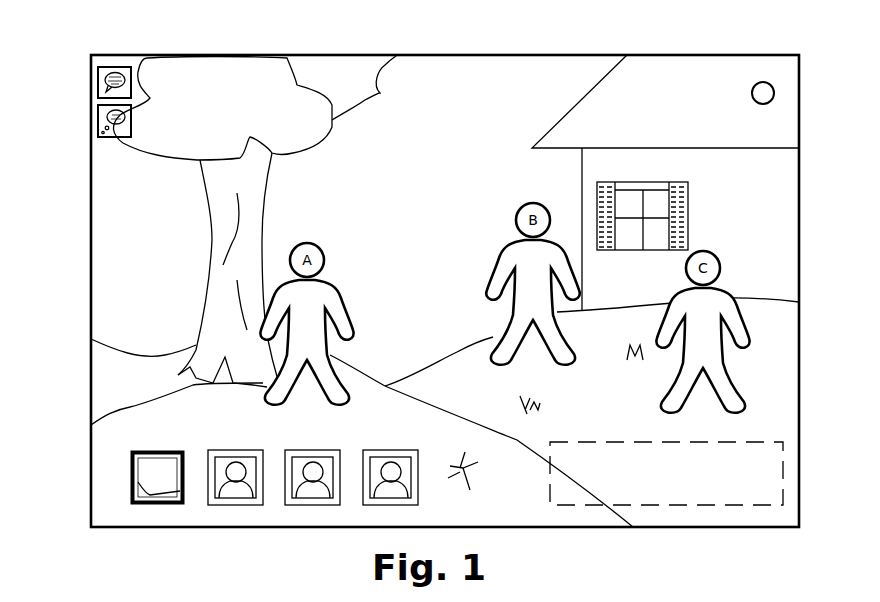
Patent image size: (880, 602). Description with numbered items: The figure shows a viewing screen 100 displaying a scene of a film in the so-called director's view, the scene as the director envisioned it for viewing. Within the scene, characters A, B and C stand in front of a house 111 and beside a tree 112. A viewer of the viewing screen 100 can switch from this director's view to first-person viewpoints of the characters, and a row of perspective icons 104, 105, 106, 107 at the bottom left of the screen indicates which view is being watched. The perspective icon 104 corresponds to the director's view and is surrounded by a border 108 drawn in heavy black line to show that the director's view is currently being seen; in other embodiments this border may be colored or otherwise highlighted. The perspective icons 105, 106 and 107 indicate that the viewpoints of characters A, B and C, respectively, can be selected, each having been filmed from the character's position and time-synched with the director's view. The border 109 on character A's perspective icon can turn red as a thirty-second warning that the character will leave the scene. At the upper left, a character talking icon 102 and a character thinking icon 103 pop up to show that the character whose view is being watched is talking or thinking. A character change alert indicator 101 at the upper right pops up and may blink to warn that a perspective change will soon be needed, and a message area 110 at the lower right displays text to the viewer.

The viewing screen 100 is at (535, 54).
The character change alert indicator 101 is at (753, 86).
The character talking icon 102 is at (98, 75).
The character thinking icon 103 is at (98, 116).
The perspective icon 104 is at (153, 462).
The perspective icon 105 is at (220, 460).
The perspective icon 106 is at (303, 458).
The perspective icon 107 is at (380, 448).
The border 108 is at (143, 450).
The border 109 is at (243, 450).
The message area 110 is at (645, 442).
The house 111 is at (772, 216).
The tree 112 is at (257, 186).